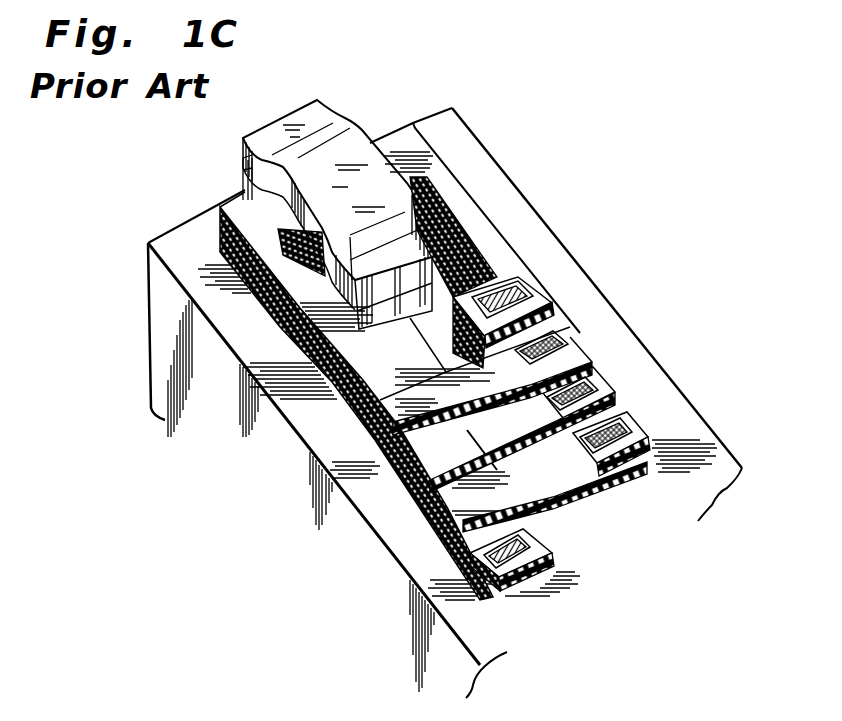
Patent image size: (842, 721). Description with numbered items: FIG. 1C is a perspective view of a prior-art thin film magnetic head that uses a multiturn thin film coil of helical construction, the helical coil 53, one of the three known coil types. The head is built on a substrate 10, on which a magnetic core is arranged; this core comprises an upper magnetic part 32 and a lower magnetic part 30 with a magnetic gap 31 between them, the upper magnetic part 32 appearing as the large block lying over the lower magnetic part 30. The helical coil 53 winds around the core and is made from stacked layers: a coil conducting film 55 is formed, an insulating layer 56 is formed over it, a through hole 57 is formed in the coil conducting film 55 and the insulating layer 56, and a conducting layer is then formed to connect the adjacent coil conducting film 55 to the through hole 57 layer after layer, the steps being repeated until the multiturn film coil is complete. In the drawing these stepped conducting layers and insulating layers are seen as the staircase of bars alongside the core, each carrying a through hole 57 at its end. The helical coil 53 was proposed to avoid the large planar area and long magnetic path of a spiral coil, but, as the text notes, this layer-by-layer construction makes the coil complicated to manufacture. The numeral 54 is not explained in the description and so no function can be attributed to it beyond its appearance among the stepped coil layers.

The substrate 10 is at (483, 165).
The lower magnetic part 30 is at (245, 181).
The magnetic gap 31 is at (243, 167).
The upper magnetic part 32 is at (316, 106).
The helical coil 53 is at (483, 212).
The bars 54 is at (628, 412).
The coil conducting film 55 is at (560, 543).
The insulating layer 56 is at (508, 525).
The through hole 57 is at (515, 298).